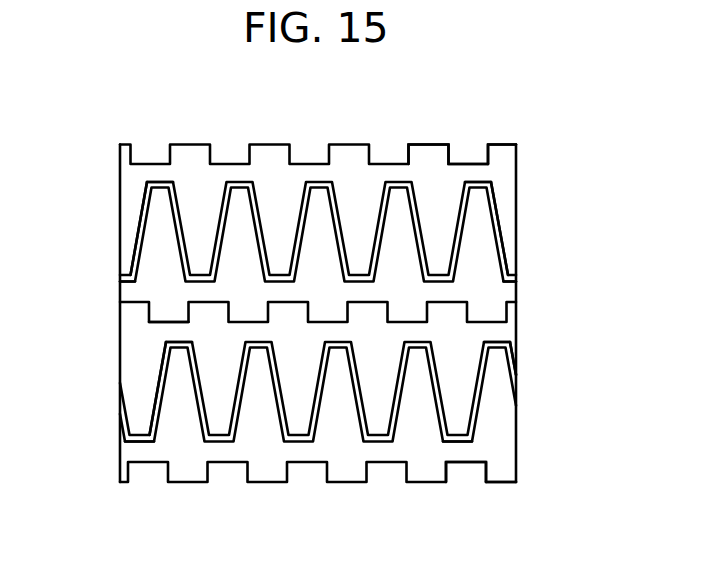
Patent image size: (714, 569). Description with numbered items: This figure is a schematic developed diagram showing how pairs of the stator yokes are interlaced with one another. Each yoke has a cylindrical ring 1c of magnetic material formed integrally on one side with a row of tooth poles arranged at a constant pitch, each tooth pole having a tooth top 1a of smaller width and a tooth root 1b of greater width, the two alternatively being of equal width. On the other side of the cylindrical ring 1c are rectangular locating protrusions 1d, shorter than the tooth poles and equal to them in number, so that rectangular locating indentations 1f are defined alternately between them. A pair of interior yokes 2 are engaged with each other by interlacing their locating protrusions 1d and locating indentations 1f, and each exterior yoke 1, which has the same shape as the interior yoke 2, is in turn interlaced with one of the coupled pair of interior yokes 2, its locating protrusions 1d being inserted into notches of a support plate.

The exterior yoke 1 is at (428, 165).
The tooth top 1a is at (160, 197).
The tooth root 1b is at (155, 262).
The cylindrical ring 1c is at (147, 291).
The locating protrusion 1d is at (160, 312).
The locating indentation 1f is at (463, 155).
The interior yoke 2 is at (503, 292).